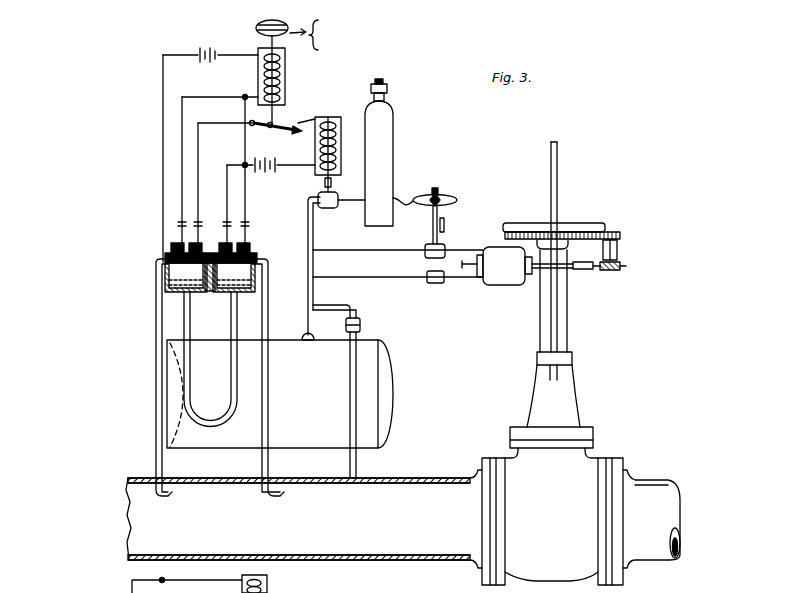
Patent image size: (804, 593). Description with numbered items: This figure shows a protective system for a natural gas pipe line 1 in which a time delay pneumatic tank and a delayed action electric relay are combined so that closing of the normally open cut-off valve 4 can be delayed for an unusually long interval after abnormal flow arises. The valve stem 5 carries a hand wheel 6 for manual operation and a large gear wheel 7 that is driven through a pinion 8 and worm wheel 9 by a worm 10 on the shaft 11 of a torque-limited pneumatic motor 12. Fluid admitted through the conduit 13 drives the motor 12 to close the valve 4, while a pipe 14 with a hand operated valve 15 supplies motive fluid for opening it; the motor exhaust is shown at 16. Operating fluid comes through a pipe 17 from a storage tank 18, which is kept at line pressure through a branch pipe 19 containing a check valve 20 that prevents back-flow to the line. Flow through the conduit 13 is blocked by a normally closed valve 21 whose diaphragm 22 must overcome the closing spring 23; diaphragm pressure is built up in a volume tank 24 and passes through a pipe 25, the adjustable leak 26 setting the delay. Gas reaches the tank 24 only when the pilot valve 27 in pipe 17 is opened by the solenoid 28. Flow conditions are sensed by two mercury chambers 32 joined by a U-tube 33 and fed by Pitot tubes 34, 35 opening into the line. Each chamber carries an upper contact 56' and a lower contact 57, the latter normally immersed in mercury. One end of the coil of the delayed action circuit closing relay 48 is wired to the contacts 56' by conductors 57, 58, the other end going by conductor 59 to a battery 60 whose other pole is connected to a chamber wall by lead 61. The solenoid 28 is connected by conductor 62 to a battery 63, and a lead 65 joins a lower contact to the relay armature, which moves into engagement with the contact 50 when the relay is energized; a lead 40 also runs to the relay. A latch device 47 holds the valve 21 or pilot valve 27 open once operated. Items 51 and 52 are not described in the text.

The pipe line 1 is at (452, 555).
The cut-off valve 4 is at (545, 570).
The valve stem 5 is at (558, 172).
The hand wheel 6 is at (598, 230).
The large gear wheel 7 is at (572, 228).
The pinion 8 is at (620, 236).
The worm wheel 9 is at (617, 269).
The worm 10 is at (624, 262).
The motor shaft 11 is at (573, 270).
The motor 12 is at (512, 285).
The conduit 13 is at (325, 259).
The pipe 14 is at (370, 292).
The hand operated valve 15 is at (436, 283).
The exhaust 16 is at (468, 268).
The pipe 17 is at (320, 290).
The storage tank 18 is at (390, 393).
The branch pipe 19 is at (360, 463).
The check valve 20 is at (362, 325).
The fluid pressure controlled valve 21 is at (445, 247).
The diaphragm 22 is at (447, 199).
The valve closing spring 23 is at (444, 183).
The volume tank 24 is at (389, 138).
The pipe 25 is at (397, 195).
The adjustable leak 26 is at (388, 91).
The pilot valve 27 is at (330, 207).
The solenoid 28 is at (330, 144).
The mercury containing chamber 32 is at (166, 270).
The U-tube 33 is at (183, 320).
The Pitot tube 34 is at (158, 389).
The Pitot tube 35 is at (268, 389).
The lead 40 is at (280, 131).
The latch device 47 is at (332, 183).
The delayed action circuit closing relay 48 is at (255, 32).
The contact 50 is at (302, 118).
The auxiliary apparatus 51 is at (217, 584).
The cell outlet 52 is at (236, 291).
The adjustable contact 56' is at (201, 252).
The conductor 57 is at (224, 223).
The conductor 58 is at (182, 183).
The conductor 59 is at (222, 58).
The battery 60 is at (166, 45).
The lead 61 is at (160, 128).
The conductor 62 is at (226, 188).
The battery 63 is at (271, 176).
The lead 65 is at (198, 143).